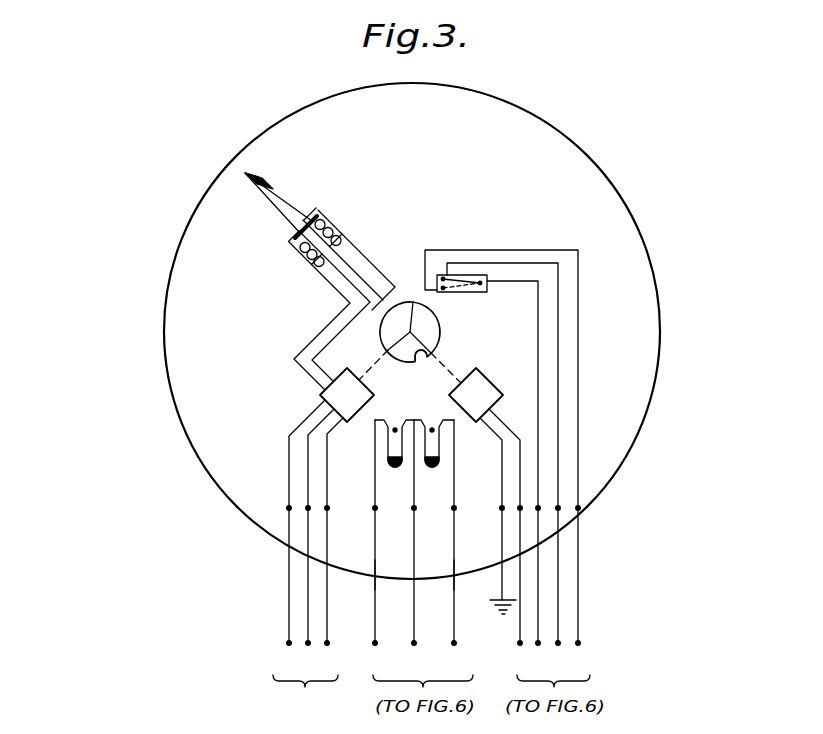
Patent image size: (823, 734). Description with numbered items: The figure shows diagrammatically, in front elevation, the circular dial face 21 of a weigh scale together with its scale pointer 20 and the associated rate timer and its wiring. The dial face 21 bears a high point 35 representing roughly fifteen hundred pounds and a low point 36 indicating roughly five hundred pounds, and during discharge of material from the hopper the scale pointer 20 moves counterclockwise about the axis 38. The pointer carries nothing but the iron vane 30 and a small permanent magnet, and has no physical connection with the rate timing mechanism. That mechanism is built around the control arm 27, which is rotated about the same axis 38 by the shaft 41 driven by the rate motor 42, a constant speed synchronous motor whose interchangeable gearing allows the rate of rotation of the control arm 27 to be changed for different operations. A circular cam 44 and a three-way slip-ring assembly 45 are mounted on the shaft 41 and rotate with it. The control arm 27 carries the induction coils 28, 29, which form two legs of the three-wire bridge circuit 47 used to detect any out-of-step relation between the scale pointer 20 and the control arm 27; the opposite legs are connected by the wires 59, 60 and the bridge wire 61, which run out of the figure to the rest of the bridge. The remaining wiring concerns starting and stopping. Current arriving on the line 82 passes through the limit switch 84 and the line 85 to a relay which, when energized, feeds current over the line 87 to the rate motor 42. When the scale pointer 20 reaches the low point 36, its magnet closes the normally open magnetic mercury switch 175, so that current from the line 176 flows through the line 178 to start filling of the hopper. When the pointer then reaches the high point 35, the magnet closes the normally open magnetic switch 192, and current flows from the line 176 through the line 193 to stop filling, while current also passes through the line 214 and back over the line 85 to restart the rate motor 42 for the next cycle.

The scale pointer 20 is at (286, 226).
The dial face 21 is at (645, 253).
The control arm 27 is at (530, 91).
The induction coil 28 is at (133, 343).
The induction coil 29 is at (342, 233).
The iron vane 30 is at (316, 216).
The high point 35 is at (465, 567).
The low point 36 is at (407, 557).
The axis 38 is at (413, 302).
The shaft 41 is at (442, 367).
The rate motor 42 is at (513, 371).
The circular cam 44 is at (440, 318).
The three-way slip-ring assembly 45 is at (166, 421).
The three-wire bridge circuit 47 is at (194, 558).
The wire 59 is at (289, 643).
The wire 60 is at (342, 544).
The bridge wire 61 is at (308, 643).
The line 82 is at (558, 643).
The limit switch 84 is at (487, 292).
The line 85 is at (538, 643).
The line 87 is at (520, 643).
The normally open magnetic mercury switch 175 is at (388, 447).
The line 176 is at (414, 643).
The line 178 is at (378, 539).
The normally open magnetic switch 192 is at (442, 440).
The line 193 is at (489, 498).
The line 214 is at (578, 643).